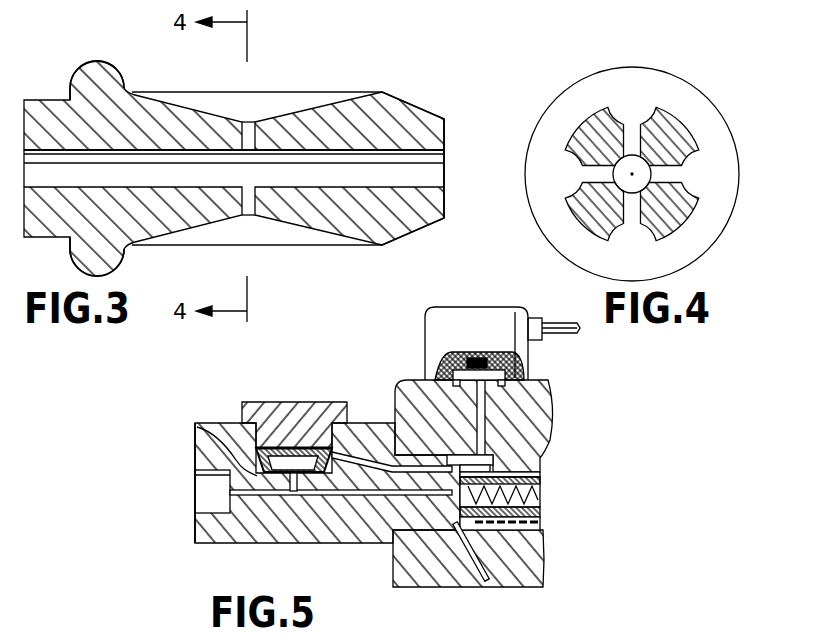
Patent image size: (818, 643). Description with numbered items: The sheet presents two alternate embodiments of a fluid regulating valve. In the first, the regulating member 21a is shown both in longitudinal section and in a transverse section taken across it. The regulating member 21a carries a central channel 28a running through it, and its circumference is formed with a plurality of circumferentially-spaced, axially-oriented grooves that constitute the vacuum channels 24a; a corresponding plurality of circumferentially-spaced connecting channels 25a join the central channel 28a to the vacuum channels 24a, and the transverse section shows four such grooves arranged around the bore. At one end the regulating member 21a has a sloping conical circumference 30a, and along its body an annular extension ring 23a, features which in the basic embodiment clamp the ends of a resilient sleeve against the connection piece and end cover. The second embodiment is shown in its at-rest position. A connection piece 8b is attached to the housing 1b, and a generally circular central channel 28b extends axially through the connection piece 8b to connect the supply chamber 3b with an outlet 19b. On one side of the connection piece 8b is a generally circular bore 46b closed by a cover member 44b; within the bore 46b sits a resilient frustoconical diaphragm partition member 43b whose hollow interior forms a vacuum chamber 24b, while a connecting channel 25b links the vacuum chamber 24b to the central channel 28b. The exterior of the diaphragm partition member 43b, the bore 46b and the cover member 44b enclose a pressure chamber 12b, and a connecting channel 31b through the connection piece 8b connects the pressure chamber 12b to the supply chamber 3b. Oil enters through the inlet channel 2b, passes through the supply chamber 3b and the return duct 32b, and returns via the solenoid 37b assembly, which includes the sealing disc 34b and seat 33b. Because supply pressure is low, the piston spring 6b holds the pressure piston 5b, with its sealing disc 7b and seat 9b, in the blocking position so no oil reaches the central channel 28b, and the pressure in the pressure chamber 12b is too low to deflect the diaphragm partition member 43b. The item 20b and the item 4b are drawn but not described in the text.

In FIG. 3, the regulating member 21a is at (358, 218).
In FIG. 4, the regulating member 21a is at (673, 218).
In FIG. 3, the annular extension ring 23a is at (92, 62).
In FIG. 4, the annular extension ring 23a is at (728, 220).
In FIG. 3, the vacuum channels 24a is at (284, 103).
In FIG. 4, the vacuum channels 24a is at (641, 108).
In FIG. 3, the connecting channels 25a is at (248, 197).
In FIG. 4, the connecting channels 25a is at (665, 173).
In FIG. 3, the central channel 28a is at (368, 168).
In FIG. 4, the central channel 28a is at (637, 167).
In FIG. 3, the sloping conical circumference 30a is at (427, 107).
In FIG. 5, the housing 1b is at (448, 565).
In FIG. 5, the inlet channel 2b is at (484, 578).
In FIG. 5, the supply chamber 3b is at (487, 522).
In FIG. 5, the plate 4b is at (534, 527).
In FIG. 5, the pressure piston 5b is at (530, 511).
In FIG. 5, the piston spring 6b is at (532, 497).
In FIG. 5, the sealing disc 7b is at (496, 466).
In FIG. 5, the connection piece 8b is at (378, 525).
In FIG. 5, the seat 9b is at (452, 490).
In FIG. 5, the pressure chamber 12b is at (268, 447).
In FIG. 5, the outlet 19b is at (215, 490).
In FIG. 5, the inlet port 20b is at (208, 503).
In FIG. 5, the vacuum chamber 24b is at (307, 467).
In FIG. 5, the connecting channel 25b is at (197, 425).
In FIG. 5, the central channel 28b is at (333, 494).
In FIG. 5, the connecting channel 31b is at (355, 452).
In FIG. 5, the return duct 32b is at (478, 418).
In FIG. 5, the seat 33b is at (482, 382).
In FIG. 5, the sealing disc 34b is at (480, 352).
In FIG. 5, the solenoid 37b is at (442, 313).
In FIG. 5, the diaphragm partition member 43b is at (252, 446).
In FIG. 5, the cover member 44b is at (286, 422).
In FIG. 5, the bore 46b is at (313, 450).